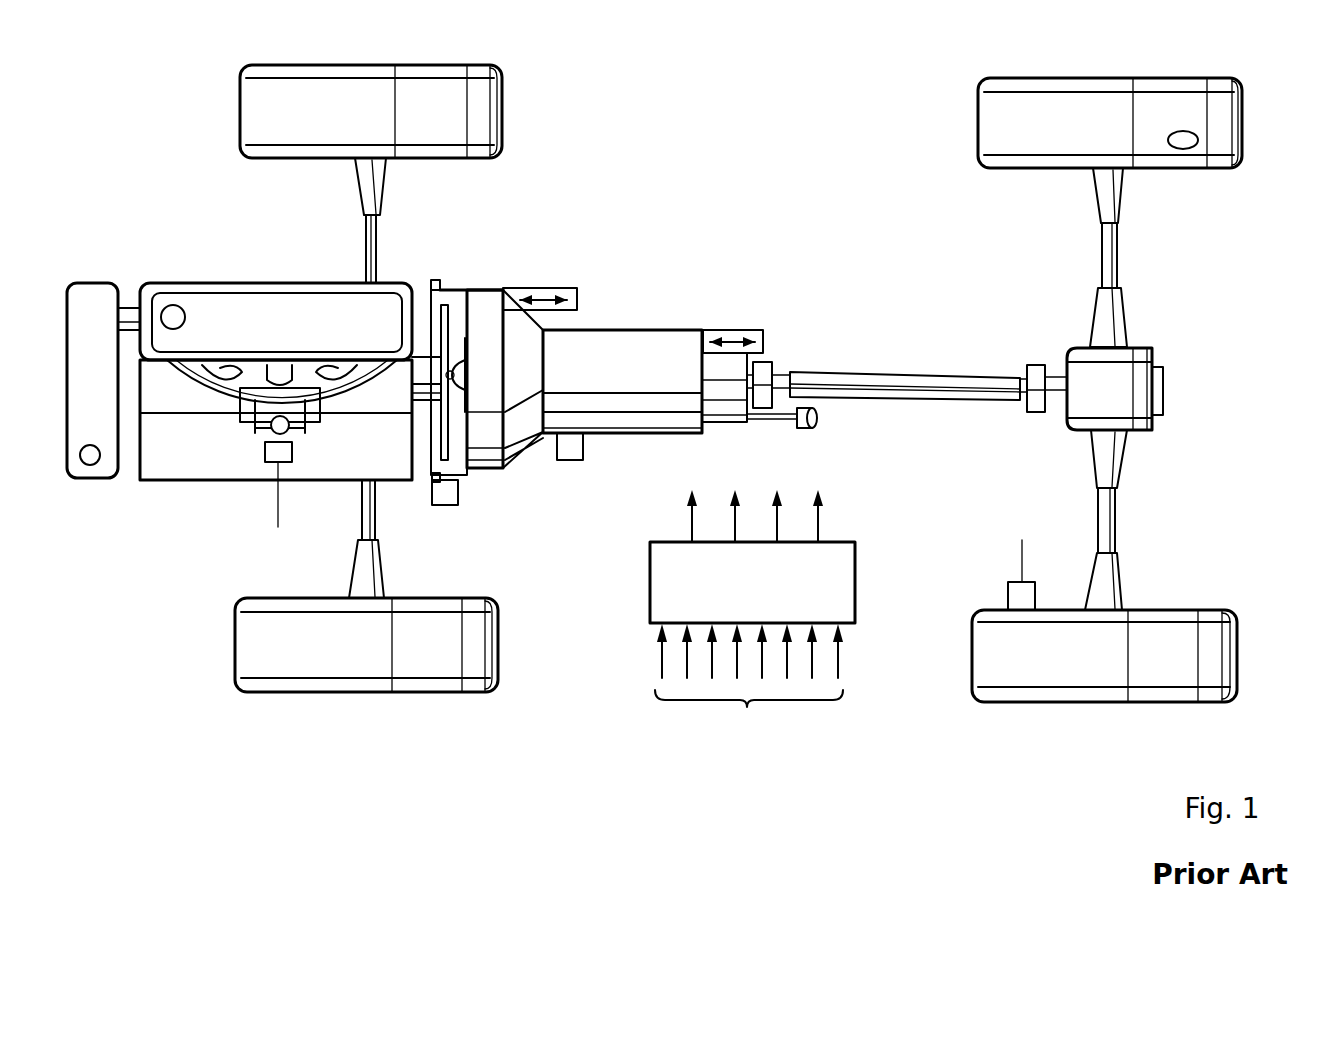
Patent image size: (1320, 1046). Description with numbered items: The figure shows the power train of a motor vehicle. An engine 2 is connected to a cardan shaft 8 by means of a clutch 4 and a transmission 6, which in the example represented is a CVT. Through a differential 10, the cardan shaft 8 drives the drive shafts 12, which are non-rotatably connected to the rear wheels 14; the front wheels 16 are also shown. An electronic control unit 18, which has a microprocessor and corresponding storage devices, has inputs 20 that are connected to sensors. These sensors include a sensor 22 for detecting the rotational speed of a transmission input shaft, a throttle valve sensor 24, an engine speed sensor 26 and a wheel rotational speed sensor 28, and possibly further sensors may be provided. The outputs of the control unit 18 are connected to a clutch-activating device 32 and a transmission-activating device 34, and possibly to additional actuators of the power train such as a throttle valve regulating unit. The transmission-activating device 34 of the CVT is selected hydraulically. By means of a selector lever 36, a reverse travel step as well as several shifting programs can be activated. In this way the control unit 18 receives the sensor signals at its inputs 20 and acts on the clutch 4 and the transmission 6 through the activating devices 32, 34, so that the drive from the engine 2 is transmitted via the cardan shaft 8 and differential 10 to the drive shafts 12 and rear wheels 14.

The engine 2 is at (205, 308).
The clutch 4 is at (491, 298).
The transmission 6 is at (619, 382).
The cardan shaft 8 is at (921, 387).
The differential 10 is at (1093, 401).
The drive shafts 12 is at (1107, 525).
The rear wheels 14 is at (1093, 136).
The front wheels 16 is at (353, 124).
The electronic control unit 18 is at (738, 598).
The inputs 20 is at (749, 684).
The sensor for detecting the rotational speed of a transmission input shaft 22 is at (567, 445).
The throttle valve sensor 24 is at (263, 449).
The engine speed sensor 26 is at (443, 490).
The wheel rotational speed sensor 28 is at (1018, 592).
The clutch-activating device 32 is at (570, 290).
The transmission-activating device 34 is at (754, 332).
The selector lever 36 is at (818, 418).